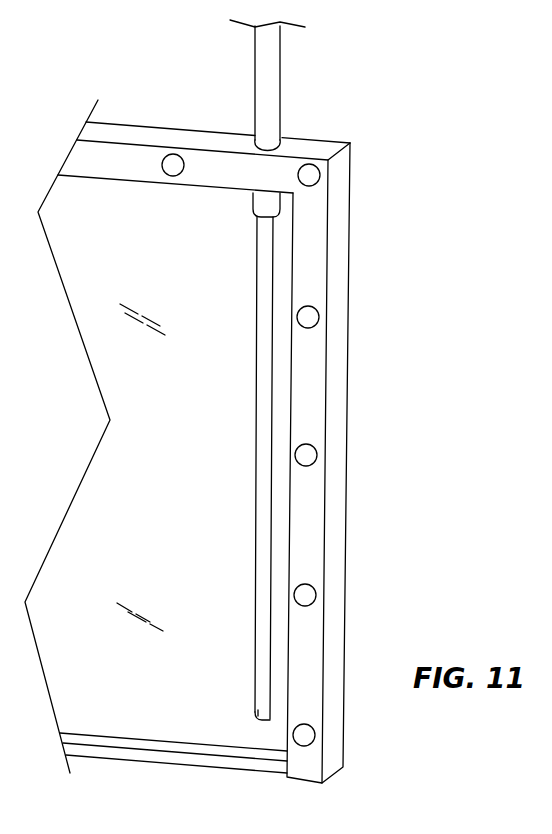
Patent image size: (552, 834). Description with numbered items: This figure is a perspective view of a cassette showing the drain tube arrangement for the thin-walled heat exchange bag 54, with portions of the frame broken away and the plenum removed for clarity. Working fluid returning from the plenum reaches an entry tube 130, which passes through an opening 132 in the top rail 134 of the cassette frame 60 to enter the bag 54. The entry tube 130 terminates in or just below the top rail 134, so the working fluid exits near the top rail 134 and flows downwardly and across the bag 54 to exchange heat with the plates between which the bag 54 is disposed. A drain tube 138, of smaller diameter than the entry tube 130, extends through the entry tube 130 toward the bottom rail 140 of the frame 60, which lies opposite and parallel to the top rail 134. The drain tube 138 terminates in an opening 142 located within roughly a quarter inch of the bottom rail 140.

The bag 54 is at (90, 497).
The cassette frame 60 is at (375, 386).
The entry tube 130 is at (282, 80).
The opening 132 is at (288, 147).
The top rail 134 is at (145, 135).
The drain tube 138 is at (255, 545).
The bottom rail 140 is at (208, 770).
The opening 142 is at (250, 726).